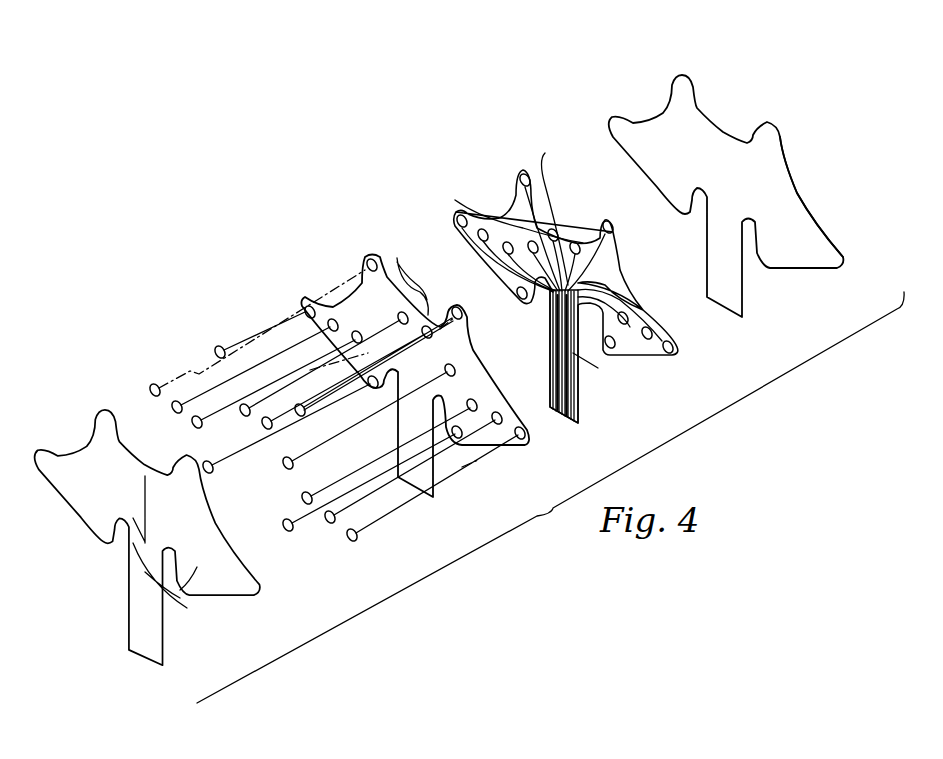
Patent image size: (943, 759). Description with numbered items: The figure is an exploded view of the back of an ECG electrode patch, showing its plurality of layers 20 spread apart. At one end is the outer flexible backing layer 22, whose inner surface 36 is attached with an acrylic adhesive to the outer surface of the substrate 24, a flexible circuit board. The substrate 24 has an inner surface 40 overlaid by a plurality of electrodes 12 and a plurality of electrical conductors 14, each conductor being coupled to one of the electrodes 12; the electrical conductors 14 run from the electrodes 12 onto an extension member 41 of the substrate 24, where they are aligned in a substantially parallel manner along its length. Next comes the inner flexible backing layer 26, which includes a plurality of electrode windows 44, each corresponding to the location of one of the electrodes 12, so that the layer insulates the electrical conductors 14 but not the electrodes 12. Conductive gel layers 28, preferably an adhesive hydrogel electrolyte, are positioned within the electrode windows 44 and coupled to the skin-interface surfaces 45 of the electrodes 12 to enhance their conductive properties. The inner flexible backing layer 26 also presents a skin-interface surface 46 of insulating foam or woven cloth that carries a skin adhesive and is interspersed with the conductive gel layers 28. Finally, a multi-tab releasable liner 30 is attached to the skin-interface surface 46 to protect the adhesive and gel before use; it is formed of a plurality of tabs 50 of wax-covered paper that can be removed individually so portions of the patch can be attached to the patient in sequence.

The electrodes 12 is at (548, 150).
The electrical conductors 14 is at (586, 353).
The layers 20 is at (599, 415).
The outer flexible backing layer 22 is at (850, 274).
The substrate 24 is at (696, 347).
The inner flexible backing layer 26 is at (549, 442).
The conductive gel layers 28 is at (289, 527).
The multi-tab releasable liner layer 30 is at (276, 597).
The inner surface 36 is at (780, 195).
The inner surface 40 is at (610, 270).
The extension member 41 is at (572, 398).
The electrode windows 44 is at (397, 258).
The skin-interface surfaces 45 is at (455, 200).
The skin-interface surface 46 is at (460, 353).
The tabs 50 is at (190, 610).